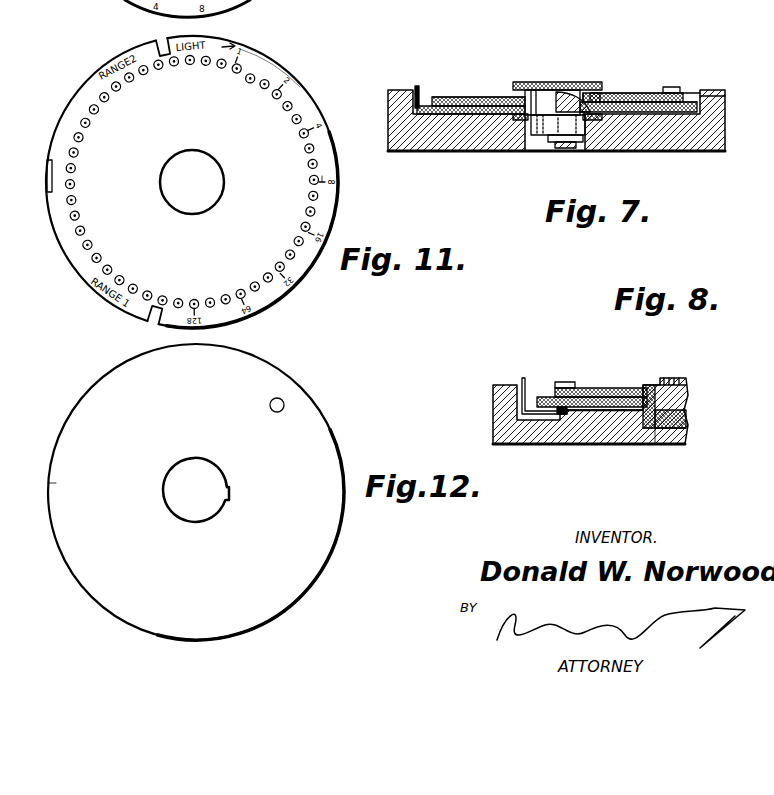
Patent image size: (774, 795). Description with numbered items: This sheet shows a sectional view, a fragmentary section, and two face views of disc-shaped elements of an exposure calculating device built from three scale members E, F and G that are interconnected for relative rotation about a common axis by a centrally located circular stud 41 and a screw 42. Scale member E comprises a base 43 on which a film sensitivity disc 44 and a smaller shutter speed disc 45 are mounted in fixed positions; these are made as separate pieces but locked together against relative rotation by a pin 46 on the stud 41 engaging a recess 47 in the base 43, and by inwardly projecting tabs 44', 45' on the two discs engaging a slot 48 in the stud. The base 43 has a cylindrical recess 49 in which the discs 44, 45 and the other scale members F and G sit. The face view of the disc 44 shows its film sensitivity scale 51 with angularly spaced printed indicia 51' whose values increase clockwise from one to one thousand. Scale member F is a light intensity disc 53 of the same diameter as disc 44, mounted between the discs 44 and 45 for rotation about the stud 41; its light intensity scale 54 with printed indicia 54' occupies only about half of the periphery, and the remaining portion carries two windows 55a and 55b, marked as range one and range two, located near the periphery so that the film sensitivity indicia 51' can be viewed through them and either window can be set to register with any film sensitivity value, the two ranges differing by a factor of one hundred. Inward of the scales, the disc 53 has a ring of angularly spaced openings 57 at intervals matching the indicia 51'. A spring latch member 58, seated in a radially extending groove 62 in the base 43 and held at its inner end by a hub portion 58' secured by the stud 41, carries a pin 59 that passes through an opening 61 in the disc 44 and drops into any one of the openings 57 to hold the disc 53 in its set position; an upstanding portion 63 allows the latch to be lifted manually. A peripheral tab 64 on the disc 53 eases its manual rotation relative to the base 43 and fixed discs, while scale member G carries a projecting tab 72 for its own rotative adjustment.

In FIG. 7, the circular stud 41 is at (538, 97).
In FIG. 8, the circular stud 41 is at (667, 393).
In FIG. 7, the screw 42 is at (556, 144).
In FIG. 7, the base 43 is at (468, 147).
In FIG. 8, the base 43 is at (498, 422).
In FIG. 7, the film sensitivity disc 44 is at (542, 139).
In FIG. 12, the film sensitivity disc 44 is at (203, 492).
In FIG. 8, the film sensitivity disc 44 is at (592, 377).
In FIG. 7, the inwardly projecting tab 44' is at (571, 78).
In FIG. 12, the inwardly projecting tab 44' is at (212, 486).
In FIG. 7, the shutter speed disc 45 is at (557, 77).
In FIG. 7, the inwardly projecting tab 45' is at (590, 71).
In FIG. 7, the pin 46 is at (580, 145).
In FIG. 7, the recess 47 is at (574, 144).
In FIG. 7, the slot 48 is at (594, 93).
In FIG. 7, the cylindrical recess 49 is at (697, 95).
In FIG. 12, the film sensitivity scale 51 is at (157, 485).
In FIG. 12, the indicia 51' is at (89, 459).
In FIG. 7, the light intensity disc 53 is at (490, 100).
In FIG. 11, the light intensity disc 53 is at (74, 97).
In FIG. 11, the light intensity scale 54 is at (296, 68).
In FIG. 11, the indicia 54' is at (344, 149).
In FIG. 11, the opening 55a is at (155, 324).
In FIG. 11, the opening 55b is at (156, 38).
In FIG. 11, the openings 57 is at (249, 83).
In FIG. 8, the openings 57 is at (550, 396).
In FIG. 8, the spring latch member 58 is at (600, 446).
In FIG. 7, the hub portion 58' is at (544, 155).
In FIG. 8, the hub portion 58' is at (663, 452).
In FIG. 8, the pin 59 is at (560, 412).
In FIG. 12, the opening 61 is at (282, 399).
In FIG. 8, the opening 61 is at (600, 417).
In FIG. 8, the radially extending groove 62 is at (614, 422).
In FIG. 8, the upstanding portion 63 is at (522, 376).
In FIG. 7, the peripheral tab 64 is at (417, 87).
In FIG. 11, the peripheral tab 64 is at (46, 166).
In FIG. 7, the projecting tab 72 is at (675, 87).
In FIG. 8, the projecting tab 72 is at (566, 384).
In FIG. 7, the scale member E is at (725, 97).
In FIG. 7, the scale member F is at (650, 100).
In FIG. 11, the scale member F is at (68, 245).
In FIG. 7, the scale member G is at (613, 97).